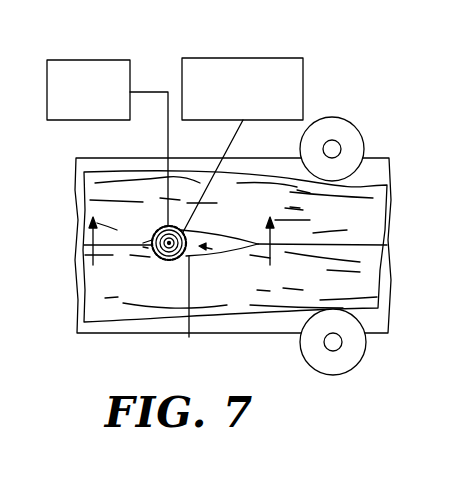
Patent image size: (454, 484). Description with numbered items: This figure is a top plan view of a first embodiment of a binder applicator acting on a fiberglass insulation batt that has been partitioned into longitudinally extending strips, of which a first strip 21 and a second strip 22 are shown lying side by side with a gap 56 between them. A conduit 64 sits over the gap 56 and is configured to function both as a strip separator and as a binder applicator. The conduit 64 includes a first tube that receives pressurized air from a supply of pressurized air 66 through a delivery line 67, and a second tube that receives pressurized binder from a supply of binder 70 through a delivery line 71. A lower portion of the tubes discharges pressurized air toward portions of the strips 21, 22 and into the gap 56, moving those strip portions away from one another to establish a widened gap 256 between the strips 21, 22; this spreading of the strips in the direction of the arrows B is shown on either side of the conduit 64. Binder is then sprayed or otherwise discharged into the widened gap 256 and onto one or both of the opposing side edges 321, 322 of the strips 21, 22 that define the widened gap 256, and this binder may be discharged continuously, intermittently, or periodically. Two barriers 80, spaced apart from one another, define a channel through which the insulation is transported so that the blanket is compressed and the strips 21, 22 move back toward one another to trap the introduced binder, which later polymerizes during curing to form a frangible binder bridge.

The first strip 21 is at (113, 308).
The second strip 22 is at (82, 189).
The gap 56 is at (154, 281).
The conduit 64 is at (153, 233).
The supply of pressurized air 66 is at (107, 113).
The delivery line 67 is at (168, 138).
The supply of binder 70 is at (303, 84).
The delivery line 71 is at (238, 132).
The barriers 80 is at (364, 134).
The widened gap 256 is at (214, 254).
The side edge 321 is at (178, 311).
The side edge 322 is at (192, 235).
The direction arrows B is at (139, 256).